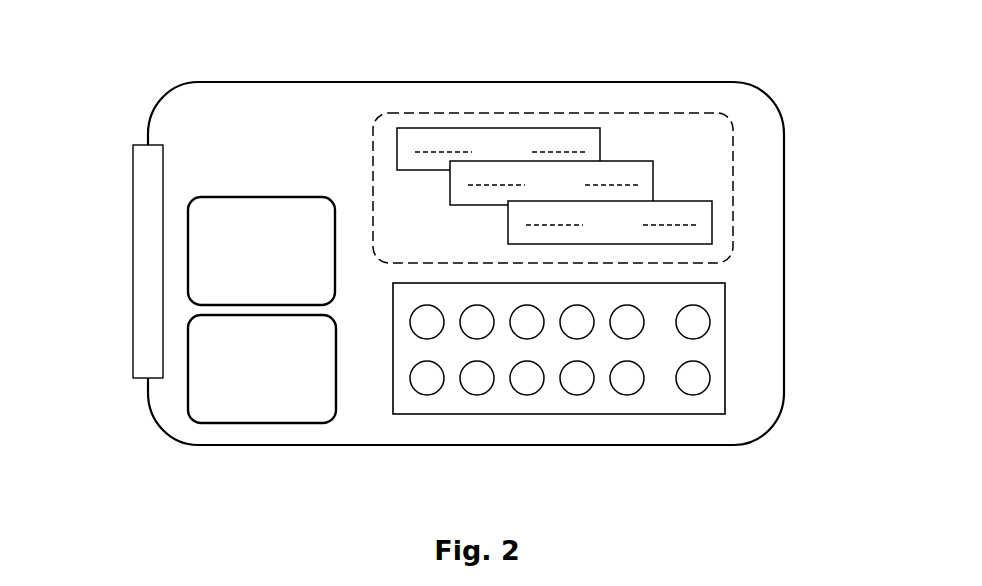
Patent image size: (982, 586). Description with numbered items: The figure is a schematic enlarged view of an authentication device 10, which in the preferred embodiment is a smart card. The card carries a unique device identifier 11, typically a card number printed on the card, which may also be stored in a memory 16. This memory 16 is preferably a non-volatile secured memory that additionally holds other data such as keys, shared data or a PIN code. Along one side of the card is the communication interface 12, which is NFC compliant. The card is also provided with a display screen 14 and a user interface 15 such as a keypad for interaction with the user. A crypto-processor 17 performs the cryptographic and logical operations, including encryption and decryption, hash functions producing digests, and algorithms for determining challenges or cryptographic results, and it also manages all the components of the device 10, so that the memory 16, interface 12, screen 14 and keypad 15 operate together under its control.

The authentication device 10 is at (765, 270).
The device identifier 11 is at (260, 102).
The communication interface 12 is at (143, 206).
The display screen 14 is at (733, 167).
The user interface 15 is at (712, 352).
The memory 16 is at (202, 360).
The crypto-processor 17 is at (203, 280).